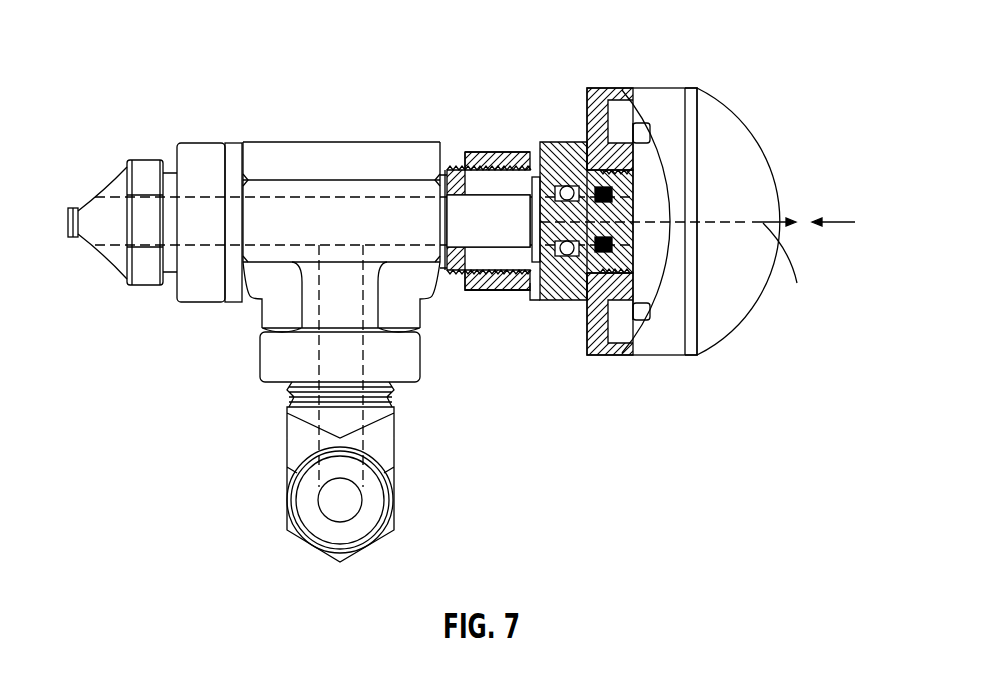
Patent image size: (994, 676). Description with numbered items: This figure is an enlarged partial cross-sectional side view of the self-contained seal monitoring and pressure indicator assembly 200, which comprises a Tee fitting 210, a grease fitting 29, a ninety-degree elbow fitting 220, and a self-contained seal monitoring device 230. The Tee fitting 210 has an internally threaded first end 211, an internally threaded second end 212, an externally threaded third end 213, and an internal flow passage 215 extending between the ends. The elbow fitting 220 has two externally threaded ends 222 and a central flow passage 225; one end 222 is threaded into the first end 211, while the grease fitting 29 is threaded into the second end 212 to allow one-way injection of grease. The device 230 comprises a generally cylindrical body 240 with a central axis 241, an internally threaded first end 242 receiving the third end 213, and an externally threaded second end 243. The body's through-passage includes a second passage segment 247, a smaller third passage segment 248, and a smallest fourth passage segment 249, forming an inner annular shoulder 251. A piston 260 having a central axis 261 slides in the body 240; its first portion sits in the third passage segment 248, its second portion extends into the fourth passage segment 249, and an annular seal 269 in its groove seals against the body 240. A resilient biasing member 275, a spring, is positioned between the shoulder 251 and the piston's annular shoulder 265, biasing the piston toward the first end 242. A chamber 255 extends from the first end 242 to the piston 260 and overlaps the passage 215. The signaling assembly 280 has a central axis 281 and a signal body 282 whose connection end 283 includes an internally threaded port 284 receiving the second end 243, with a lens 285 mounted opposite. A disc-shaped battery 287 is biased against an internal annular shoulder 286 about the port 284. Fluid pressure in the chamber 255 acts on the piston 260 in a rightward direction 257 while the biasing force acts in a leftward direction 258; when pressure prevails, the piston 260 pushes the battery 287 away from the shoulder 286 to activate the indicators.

The seal monitoring and pressure indicator assembly 200 is at (455, 284).
The grease fitting 29 is at (122, 252).
The Tee fitting 210 is at (341, 224).
The first end 211 is at (272, 357).
The second end 212 is at (193, 292).
The third end 213 is at (446, 176).
The internal flow passage 215 is at (353, 200).
The ninety-degree elbow fitting 220 is at (344, 472).
The externally threaded ends 222 is at (290, 500).
The central flow passage 225 is at (367, 425).
The self-contained seal monitoring device 230 is at (568, 202).
The body 240 is at (612, 224).
The central axis 241 is at (795, 203).
The first end 242 is at (471, 207).
The second end 243 is at (640, 158).
The second passage segment 247 is at (518, 203).
The third passage segment 248 is at (536, 175).
The fourth passage segment 249 is at (635, 250).
The inner annular shoulder 251 is at (633, 230).
The chamber 255 is at (482, 292).
The rightward direction 257 is at (789, 268).
The leftward direction 258 is at (840, 223).
The piston 260 is at (530, 292).
The central axis 261 is at (795, 203).
The annular shoulder 265 is at (563, 186).
The annular seal 269 is at (565, 256).
The resilient biasing member 275 is at (635, 192).
The signaling assembly 280 is at (722, 206).
The central axis 281 is at (713, 217).
The signal body 282 is at (647, 212).
The connection end 283 is at (600, 100).
The internally threaded port 284 is at (596, 342).
The lens 285 is at (708, 112).
The internal annular shoulder 286 is at (697, 92).
The battery 287 is at (643, 312).